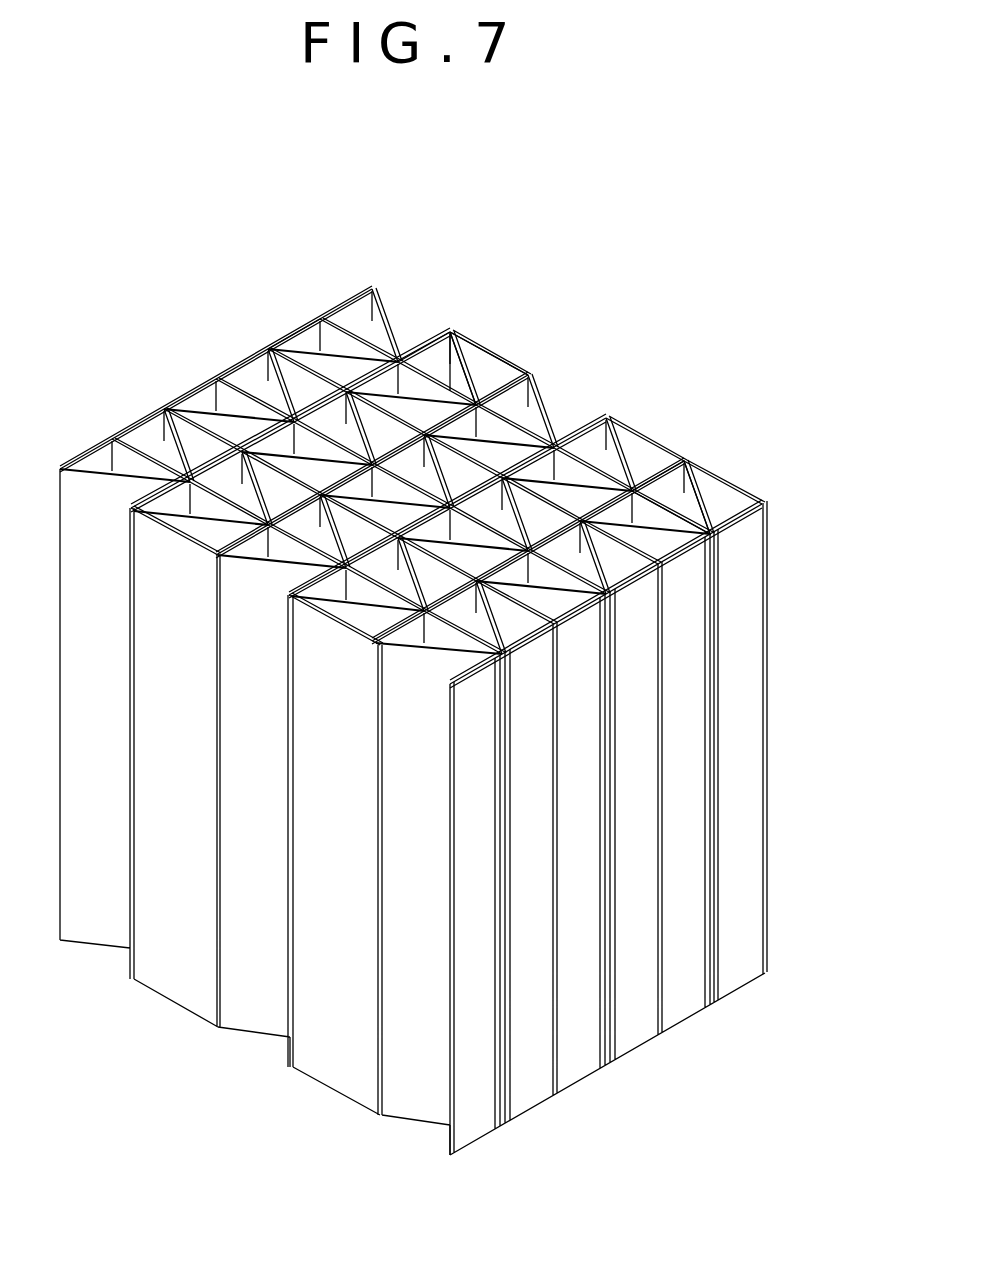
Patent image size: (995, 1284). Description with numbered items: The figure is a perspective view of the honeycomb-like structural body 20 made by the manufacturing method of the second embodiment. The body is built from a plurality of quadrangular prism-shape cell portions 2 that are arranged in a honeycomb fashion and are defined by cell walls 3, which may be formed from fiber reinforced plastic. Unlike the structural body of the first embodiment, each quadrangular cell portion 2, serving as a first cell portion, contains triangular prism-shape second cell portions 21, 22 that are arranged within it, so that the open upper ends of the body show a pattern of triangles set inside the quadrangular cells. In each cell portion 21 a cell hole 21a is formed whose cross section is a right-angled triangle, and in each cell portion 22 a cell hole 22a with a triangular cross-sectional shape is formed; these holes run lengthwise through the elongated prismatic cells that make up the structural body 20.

The honeycomb-like structural body 20 is at (650, 216).
The cell portion 2 is at (592, 278).
The cell wall 3 is at (298, 332).
The cell portion 21 is at (462, 328).
The cell portion 22 is at (462, 358).
The cell hole 21a is at (430, 380).
The cell hole 22a is at (420, 352).